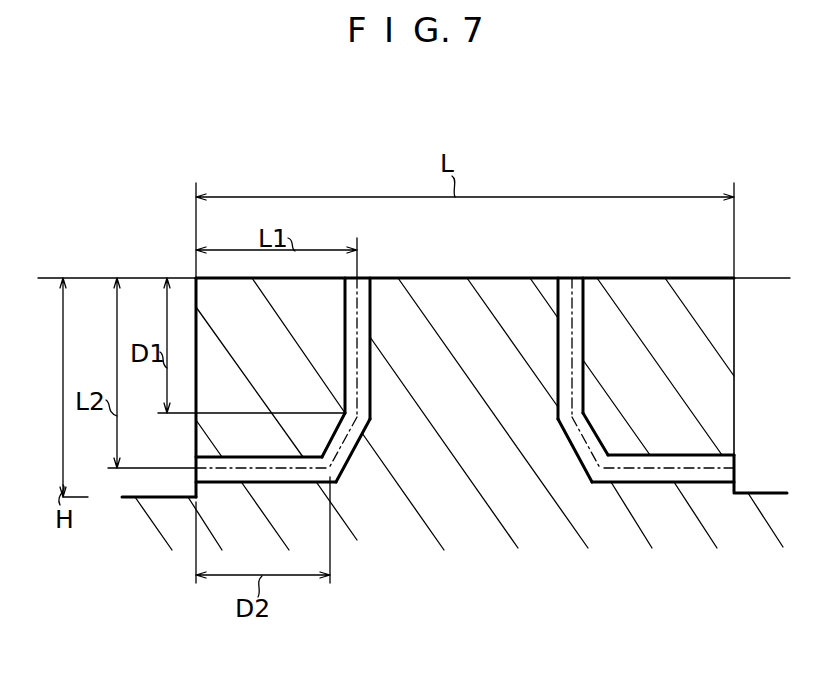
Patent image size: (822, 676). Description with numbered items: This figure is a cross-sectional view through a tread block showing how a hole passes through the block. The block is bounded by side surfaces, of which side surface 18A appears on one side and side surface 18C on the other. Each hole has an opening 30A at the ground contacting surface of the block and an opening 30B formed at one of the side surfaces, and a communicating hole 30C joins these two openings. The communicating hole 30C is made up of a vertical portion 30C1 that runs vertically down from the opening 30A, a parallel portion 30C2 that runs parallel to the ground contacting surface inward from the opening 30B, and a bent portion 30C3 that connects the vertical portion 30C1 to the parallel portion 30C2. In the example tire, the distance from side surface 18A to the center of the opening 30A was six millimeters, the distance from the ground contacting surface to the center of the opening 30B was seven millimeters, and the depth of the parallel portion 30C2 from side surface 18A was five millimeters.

The side surface 18A is at (196, 440).
The side surface 18C is at (734, 395).
The opening 30A is at (364, 278).
The opening 30B is at (734, 457).
The communicating hole 30C is at (473, 526).
The vertical portion 30C1 is at (372, 392).
The parallel portion 30C2 is at (295, 483).
The bent portion 30C3 is at (325, 468).